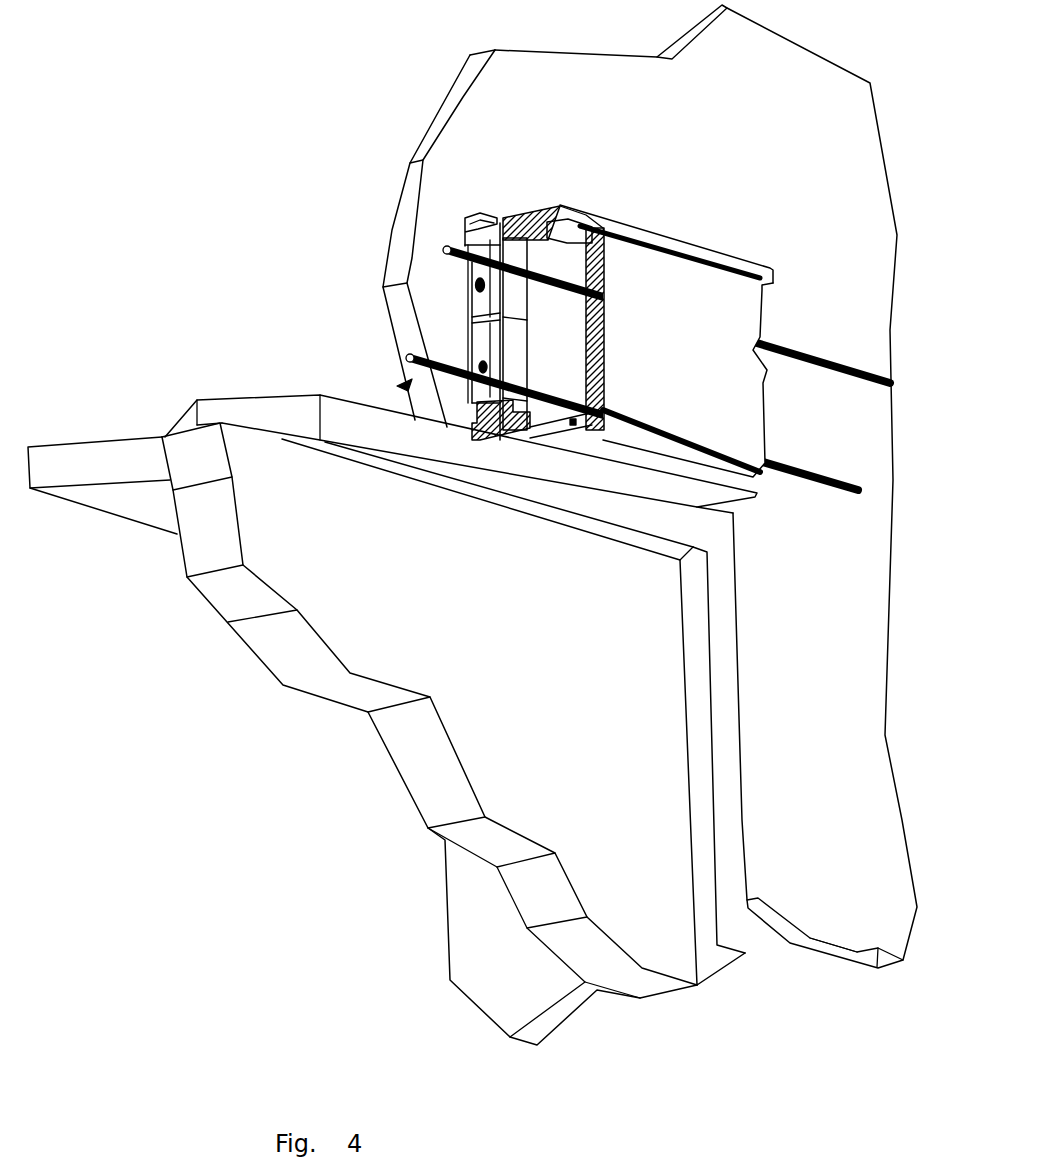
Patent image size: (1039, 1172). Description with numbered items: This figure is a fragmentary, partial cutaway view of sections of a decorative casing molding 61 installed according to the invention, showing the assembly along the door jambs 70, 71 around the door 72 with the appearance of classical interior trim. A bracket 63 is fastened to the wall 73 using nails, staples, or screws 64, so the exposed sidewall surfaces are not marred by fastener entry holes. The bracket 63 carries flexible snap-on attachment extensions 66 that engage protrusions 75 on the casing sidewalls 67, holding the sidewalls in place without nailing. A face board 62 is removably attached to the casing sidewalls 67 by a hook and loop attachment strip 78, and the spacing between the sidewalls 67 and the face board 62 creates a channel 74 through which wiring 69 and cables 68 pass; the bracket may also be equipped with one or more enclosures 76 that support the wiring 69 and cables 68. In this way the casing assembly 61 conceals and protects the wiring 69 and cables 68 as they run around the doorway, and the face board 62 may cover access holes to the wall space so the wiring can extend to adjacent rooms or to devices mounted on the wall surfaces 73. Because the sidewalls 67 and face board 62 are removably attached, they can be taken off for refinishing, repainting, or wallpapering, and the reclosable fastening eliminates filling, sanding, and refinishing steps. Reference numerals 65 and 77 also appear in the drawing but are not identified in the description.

The casing molding 61 is at (140, 725).
The face board 62 is at (728, 393).
The bracket 63 is at (465, 236).
The nails, staples, or screws 64 is at (476, 290).
The channel 65 is at (482, 303).
The flexible snap-on attachment extensions 66 is at (492, 218).
The casing sidewalls 67 is at (723, 250).
The cables 68 is at (780, 343).
The wiring 69 is at (846, 492).
The door jamb 70 is at (445, 472).
The door jamb 71 is at (711, 717).
The door 72 is at (410, 643).
The wall 73 is at (835, 838).
The channel 74 is at (574, 350).
The protrusions 75 is at (473, 437).
The enclosures 76 is at (517, 220).
The insert 77 is at (570, 228).
The hook and loop attachment strip 78 is at (592, 236).